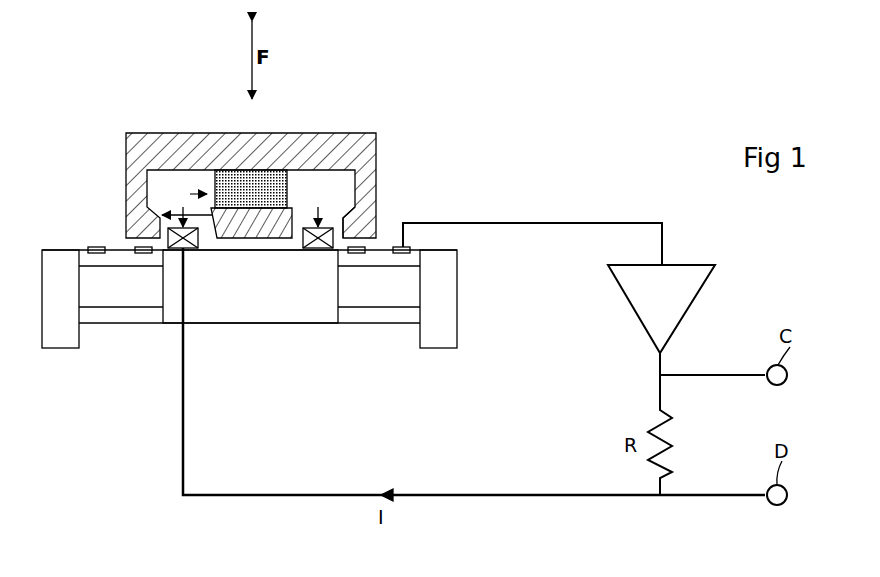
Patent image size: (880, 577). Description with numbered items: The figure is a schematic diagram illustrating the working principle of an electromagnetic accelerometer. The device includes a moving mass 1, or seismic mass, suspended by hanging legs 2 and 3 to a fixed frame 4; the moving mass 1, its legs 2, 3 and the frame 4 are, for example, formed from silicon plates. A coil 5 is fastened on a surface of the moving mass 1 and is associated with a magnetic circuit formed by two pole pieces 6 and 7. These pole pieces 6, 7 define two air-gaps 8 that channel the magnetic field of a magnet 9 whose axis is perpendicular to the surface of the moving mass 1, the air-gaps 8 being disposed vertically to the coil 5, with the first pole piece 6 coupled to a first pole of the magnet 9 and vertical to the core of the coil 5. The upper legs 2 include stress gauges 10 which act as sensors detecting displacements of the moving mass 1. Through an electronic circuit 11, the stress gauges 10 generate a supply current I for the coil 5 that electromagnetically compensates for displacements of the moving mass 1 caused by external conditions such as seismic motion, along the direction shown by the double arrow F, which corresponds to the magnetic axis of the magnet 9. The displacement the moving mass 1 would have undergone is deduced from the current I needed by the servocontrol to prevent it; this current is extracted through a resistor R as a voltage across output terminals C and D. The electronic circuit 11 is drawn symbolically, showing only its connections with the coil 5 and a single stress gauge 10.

The moving mass 1 is at (273, 312).
The legs 2 is at (117, 252).
The legs 3 is at (98, 314).
The fixed frame 4 is at (447, 294).
The coil 5 is at (311, 253).
The first pole piece 6 is at (293, 215).
The pole piece 7 is at (367, 157).
The air-gaps 8 is at (185, 225).
The magnet 9 is at (238, 172).
The stress gauges 10 is at (362, 232).
The electronic circuit 11 is at (695, 291).